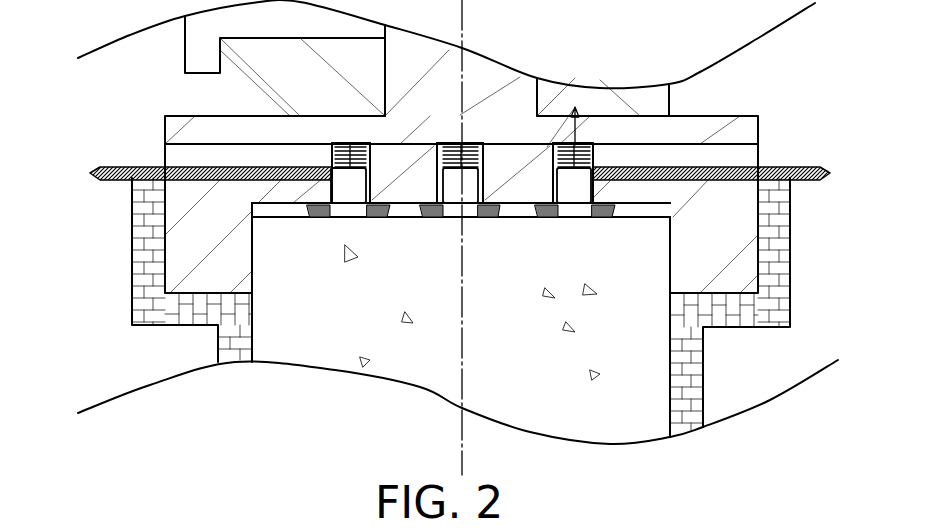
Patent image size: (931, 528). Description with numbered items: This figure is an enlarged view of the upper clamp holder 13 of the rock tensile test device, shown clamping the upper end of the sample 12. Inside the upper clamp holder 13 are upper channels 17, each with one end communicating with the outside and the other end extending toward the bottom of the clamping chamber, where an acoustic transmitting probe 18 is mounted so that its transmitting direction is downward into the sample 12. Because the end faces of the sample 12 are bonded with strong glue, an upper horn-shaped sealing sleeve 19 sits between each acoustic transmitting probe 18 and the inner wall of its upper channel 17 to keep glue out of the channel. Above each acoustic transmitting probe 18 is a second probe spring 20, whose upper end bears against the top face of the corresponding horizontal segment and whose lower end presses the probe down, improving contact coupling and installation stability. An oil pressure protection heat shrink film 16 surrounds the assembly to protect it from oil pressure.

The sample 12 is at (420, 357).
The upper clamp holder 13 is at (192, 248).
The oil pressure protection heat shrink film 16 is at (150, 295).
The upper channel 17 is at (191, 158).
The acoustic transmitting probe 18 is at (348, 195).
The upper horn-shaped sealing sleeve 19 is at (378, 215).
The second probe spring 20 is at (345, 148).